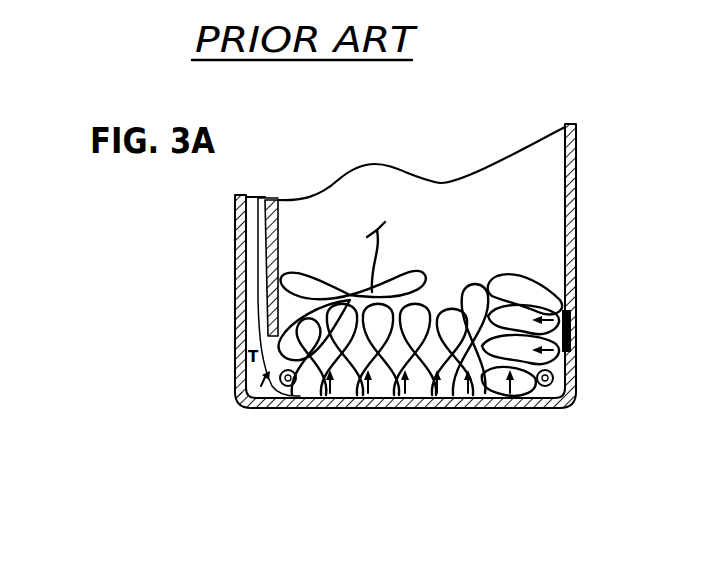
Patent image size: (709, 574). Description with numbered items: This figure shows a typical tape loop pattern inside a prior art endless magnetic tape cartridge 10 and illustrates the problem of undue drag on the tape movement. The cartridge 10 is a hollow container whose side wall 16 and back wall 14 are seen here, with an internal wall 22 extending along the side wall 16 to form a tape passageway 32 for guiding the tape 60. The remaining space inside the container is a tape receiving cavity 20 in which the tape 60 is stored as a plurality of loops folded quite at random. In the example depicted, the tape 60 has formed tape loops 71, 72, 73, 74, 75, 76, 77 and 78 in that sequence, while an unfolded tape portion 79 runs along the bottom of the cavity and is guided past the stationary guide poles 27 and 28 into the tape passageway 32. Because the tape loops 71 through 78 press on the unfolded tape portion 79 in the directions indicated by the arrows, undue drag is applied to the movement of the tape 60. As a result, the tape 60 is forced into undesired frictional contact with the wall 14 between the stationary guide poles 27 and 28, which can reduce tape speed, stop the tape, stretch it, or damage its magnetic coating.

The tape cartridge 10 is at (632, 229).
The back wall 14 is at (305, 409).
The side wall 16 is at (240, 297).
The tape receiving cavity 20 is at (415, 212).
The internal wall 22 is at (262, 265).
The stationary guide pole 27 is at (548, 409).
The stationary guide pole 28 is at (285, 409).
The tape passageway 32 is at (248, 228).
The tape 60 is at (408, 290).
The tape loop 71 is at (324, 409).
The tape loop 72 is at (360, 409).
The tape loop 73 is at (397, 409).
The tape loop 74 is at (430, 409).
The tape loop 75 is at (465, 409).
The tape loop 76 is at (515, 409).
The tape loop 77 is at (578, 348).
The tape loop 78 is at (578, 318).
The unfolded tape portion 79 is at (493, 409).